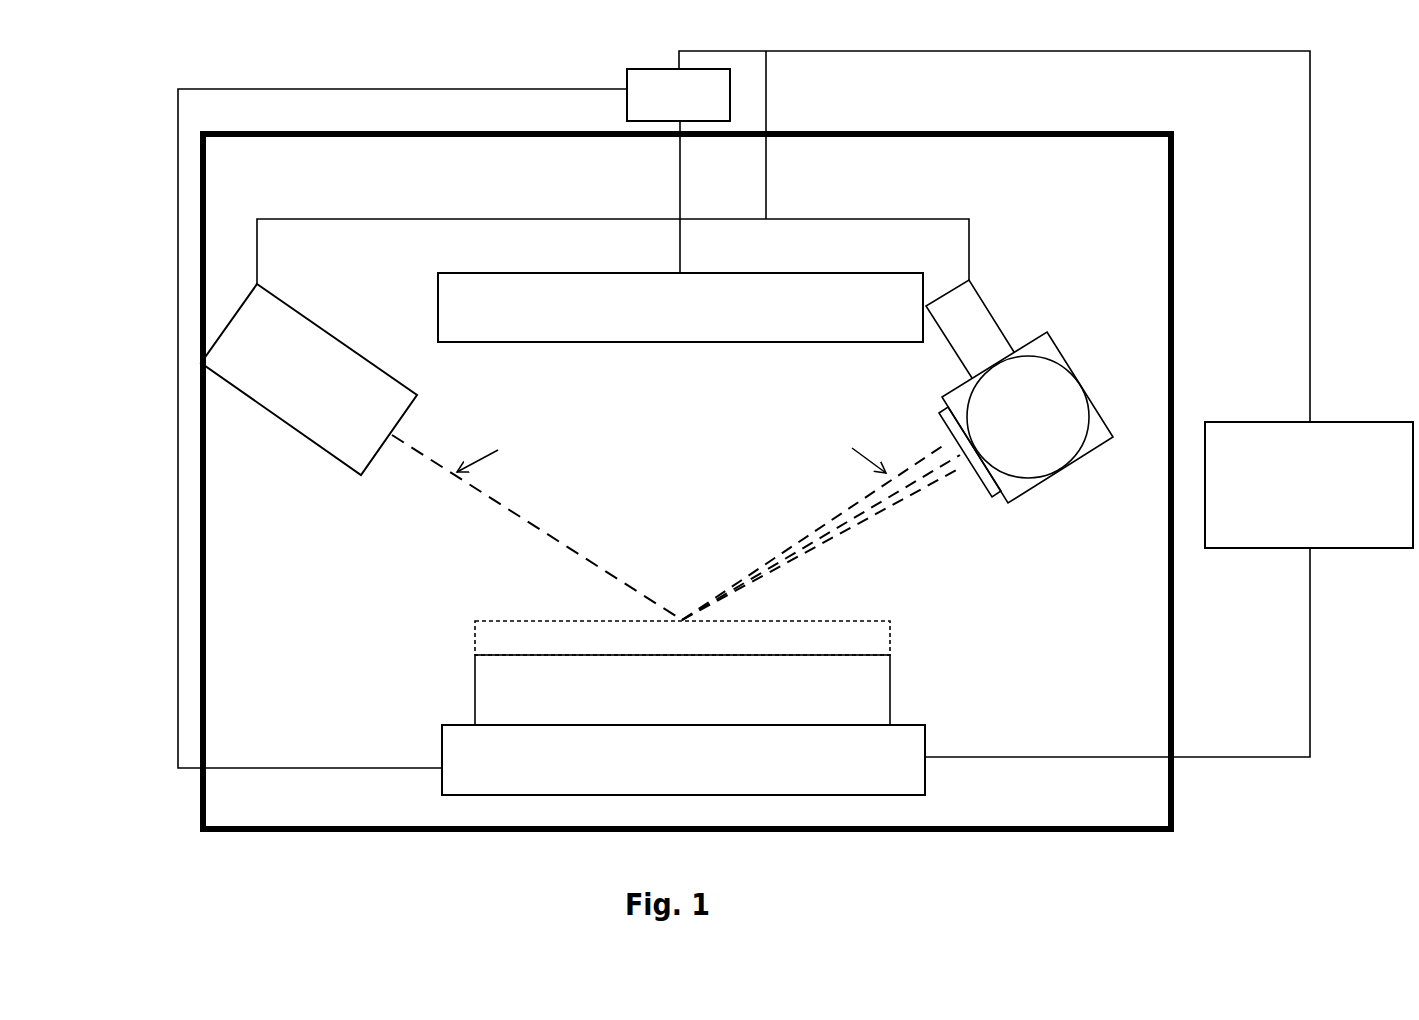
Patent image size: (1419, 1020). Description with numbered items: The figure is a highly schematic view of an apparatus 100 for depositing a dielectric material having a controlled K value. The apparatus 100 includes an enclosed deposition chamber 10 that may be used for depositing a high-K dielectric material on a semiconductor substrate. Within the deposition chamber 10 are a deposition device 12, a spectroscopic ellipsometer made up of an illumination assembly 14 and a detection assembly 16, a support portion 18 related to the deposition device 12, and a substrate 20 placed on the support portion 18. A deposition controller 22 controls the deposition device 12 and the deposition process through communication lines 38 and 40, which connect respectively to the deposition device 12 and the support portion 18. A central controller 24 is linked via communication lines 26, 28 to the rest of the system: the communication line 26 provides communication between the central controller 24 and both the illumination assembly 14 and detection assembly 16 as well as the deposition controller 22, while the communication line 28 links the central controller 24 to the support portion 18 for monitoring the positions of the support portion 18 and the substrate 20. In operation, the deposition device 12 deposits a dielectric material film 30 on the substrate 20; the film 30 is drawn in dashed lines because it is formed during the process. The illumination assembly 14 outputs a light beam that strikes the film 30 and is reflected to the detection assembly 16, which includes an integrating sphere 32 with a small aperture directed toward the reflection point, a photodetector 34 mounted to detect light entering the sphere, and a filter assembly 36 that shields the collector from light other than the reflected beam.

The apparatus 100 is at (155, 173).
The deposition chamber 10 is at (1175, 793).
The deposition device 12 is at (694, 324).
The illumination assembly 14 is at (314, 397).
The detection assembly 16 is at (1062, 310).
The support portion 18 is at (696, 772).
The substrate 20 is at (696, 702).
The deposition controller 22 is at (692, 107).
The central controller 24 is at (1323, 498).
The communication line 26 is at (1310, 216).
The communication line 28 is at (1310, 617).
The dielectric material film 30 is at (696, 649).
The integrating sphere 32 is at (1046, 431).
The photodetector 34 is at (948, 348).
The filter assembly 36 is at (974, 475).
The communication line 38 is at (676, 198).
The communication line 40 is at (177, 403).